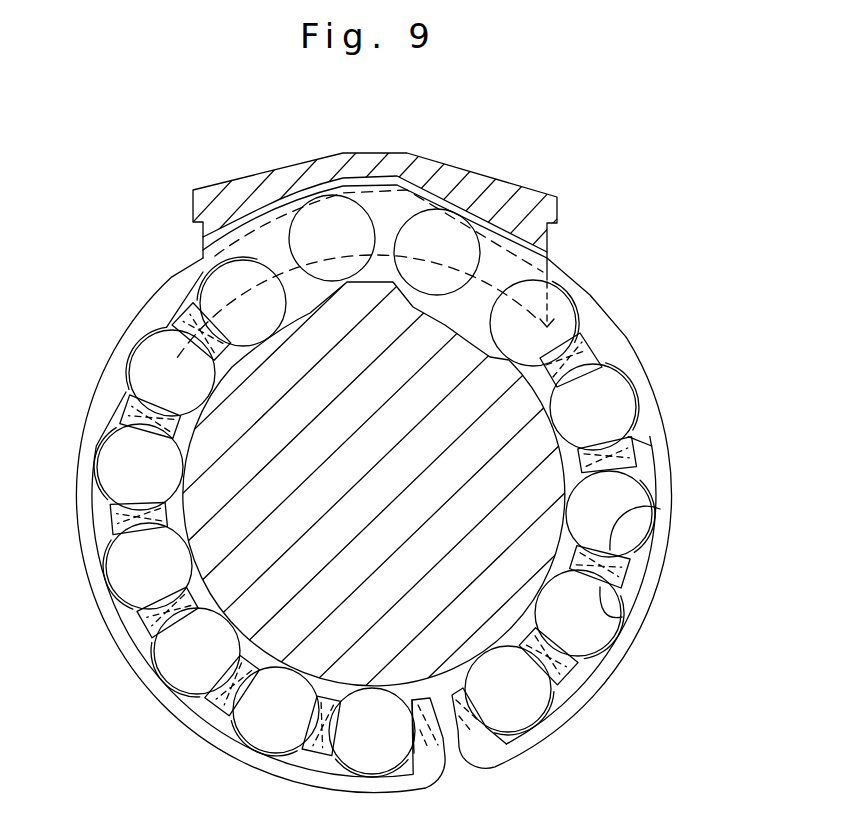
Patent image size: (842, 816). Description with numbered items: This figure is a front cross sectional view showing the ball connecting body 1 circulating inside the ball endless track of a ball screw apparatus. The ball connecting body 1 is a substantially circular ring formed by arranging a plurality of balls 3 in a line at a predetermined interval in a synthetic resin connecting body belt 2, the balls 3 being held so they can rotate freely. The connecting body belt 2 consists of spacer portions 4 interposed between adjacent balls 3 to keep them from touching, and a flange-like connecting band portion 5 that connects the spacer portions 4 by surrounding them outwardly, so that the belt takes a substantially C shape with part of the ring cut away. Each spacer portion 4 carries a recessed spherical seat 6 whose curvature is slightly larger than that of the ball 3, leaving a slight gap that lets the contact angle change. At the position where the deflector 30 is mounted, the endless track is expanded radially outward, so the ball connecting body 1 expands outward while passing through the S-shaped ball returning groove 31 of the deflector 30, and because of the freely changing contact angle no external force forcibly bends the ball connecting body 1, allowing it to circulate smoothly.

The ball connecting body 1 is at (87, 323).
The connecting body belt 2 is at (592, 294).
The ball 3 is at (610, 395).
The spacer portion 4 is at (624, 574).
The connecting band portion 5 is at (600, 333).
The spherical seat 6 is at (652, 511).
The deflector 30 is at (544, 184).
The ball returning groove 31 is at (386, 204).